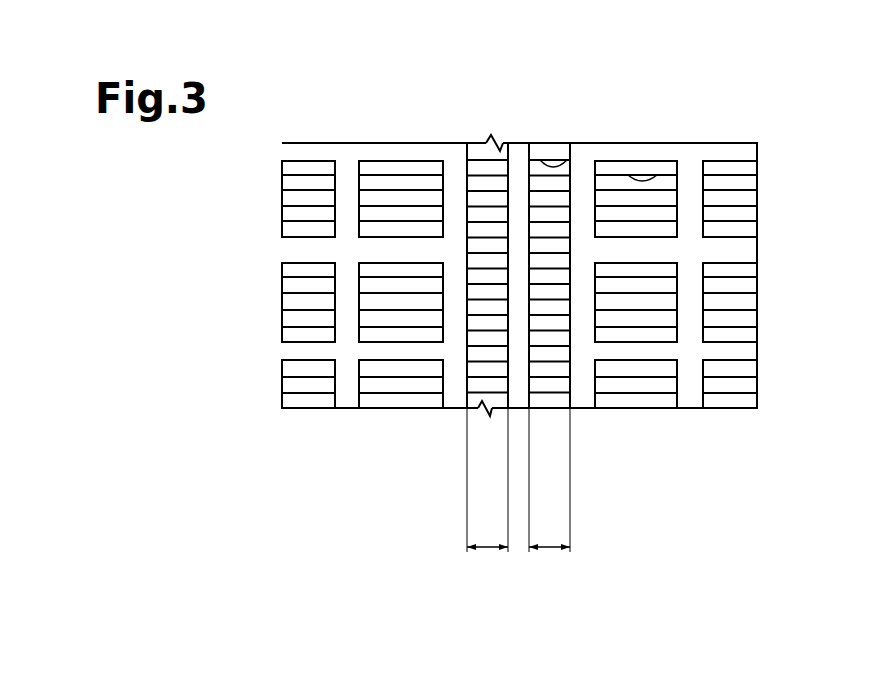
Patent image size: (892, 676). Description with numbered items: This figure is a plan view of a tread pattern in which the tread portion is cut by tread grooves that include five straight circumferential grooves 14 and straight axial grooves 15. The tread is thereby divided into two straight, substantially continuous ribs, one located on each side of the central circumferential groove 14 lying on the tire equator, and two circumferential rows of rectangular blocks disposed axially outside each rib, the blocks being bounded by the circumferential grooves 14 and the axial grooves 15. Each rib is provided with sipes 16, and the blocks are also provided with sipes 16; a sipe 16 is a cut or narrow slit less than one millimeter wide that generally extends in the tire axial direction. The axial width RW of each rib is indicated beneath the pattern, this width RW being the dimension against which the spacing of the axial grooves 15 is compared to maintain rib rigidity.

The axial groove 15 is at (292, 352).
The circumferential groove 14 is at (516, 397).
The sipe 16 is at (569, 161).
The axial width of rib RW is at (554, 588).